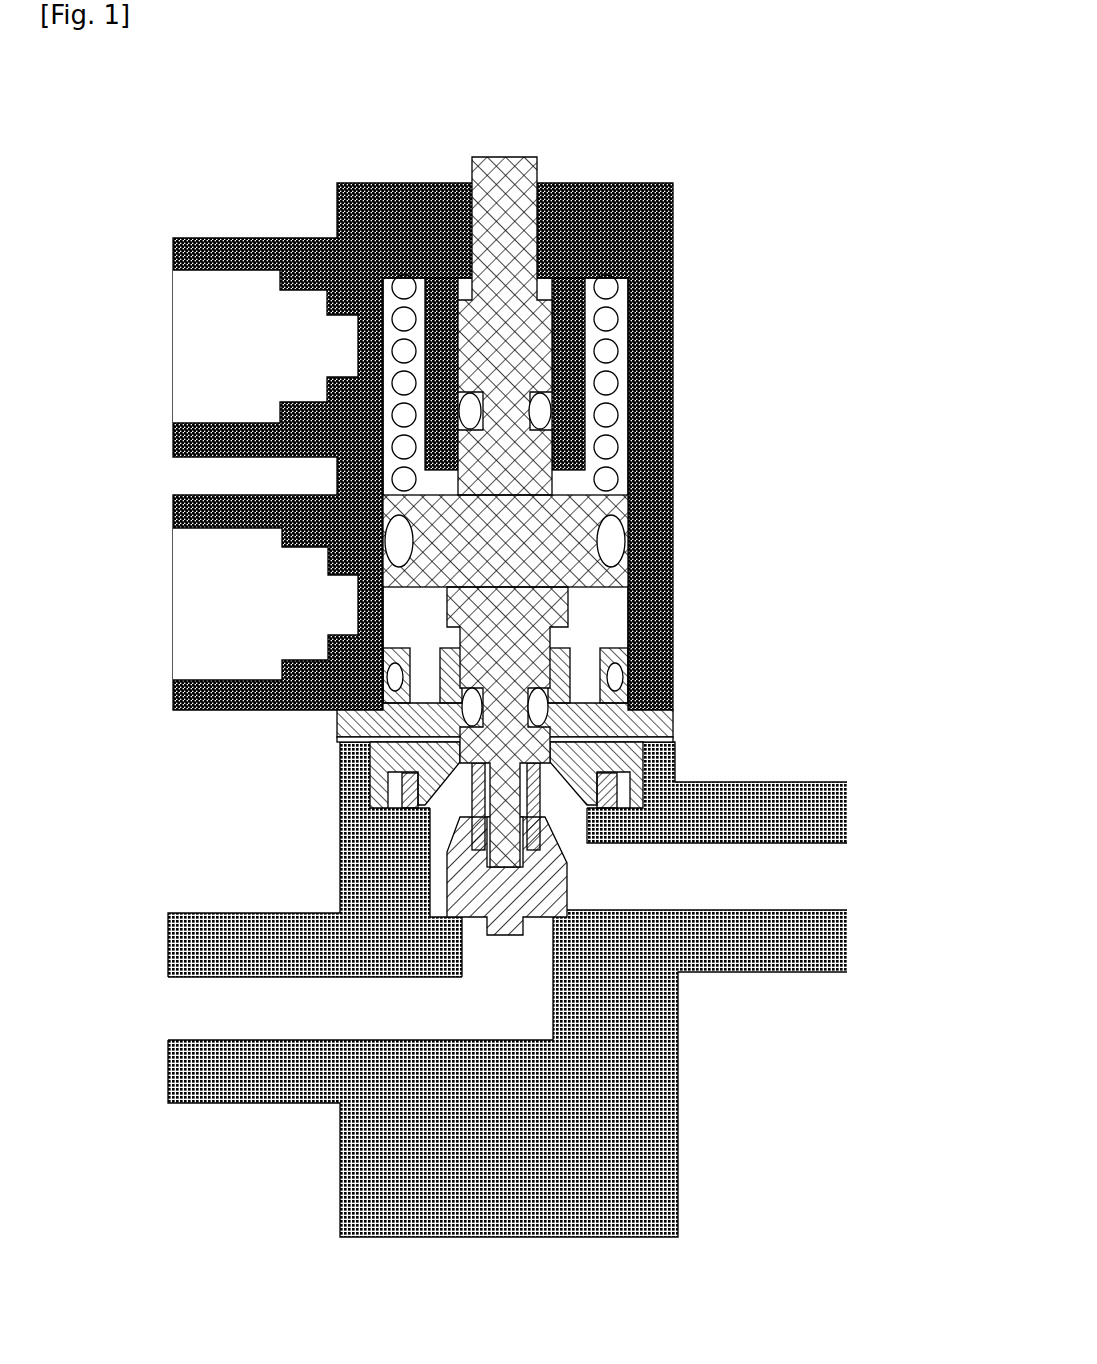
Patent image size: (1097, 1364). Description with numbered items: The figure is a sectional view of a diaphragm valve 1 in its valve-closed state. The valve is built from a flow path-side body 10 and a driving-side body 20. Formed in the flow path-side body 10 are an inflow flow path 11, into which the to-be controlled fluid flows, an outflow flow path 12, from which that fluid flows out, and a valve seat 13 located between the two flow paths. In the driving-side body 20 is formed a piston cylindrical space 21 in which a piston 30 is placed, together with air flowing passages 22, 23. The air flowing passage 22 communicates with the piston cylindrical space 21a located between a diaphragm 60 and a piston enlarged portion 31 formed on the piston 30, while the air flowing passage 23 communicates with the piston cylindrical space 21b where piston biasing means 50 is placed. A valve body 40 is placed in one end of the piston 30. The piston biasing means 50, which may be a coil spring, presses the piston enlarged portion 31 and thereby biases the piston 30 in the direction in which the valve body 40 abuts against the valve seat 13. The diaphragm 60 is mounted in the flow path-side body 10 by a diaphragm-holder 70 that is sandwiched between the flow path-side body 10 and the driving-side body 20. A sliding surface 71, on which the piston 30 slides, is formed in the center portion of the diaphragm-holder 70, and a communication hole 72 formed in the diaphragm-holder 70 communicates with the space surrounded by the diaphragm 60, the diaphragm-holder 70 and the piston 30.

The diaphragm valve 1 is at (505, 671).
The flow path-side body 10 is at (396, 1224).
The inflow flow path 11 is at (235, 1017).
The outflow flow path 12 is at (822, 938).
The valve seat 13 is at (566, 928).
The driving-side body 20 is at (656, 171).
The piston cylindrical space 21 is at (341, 490).
The piston cylindrical space 21a is at (400, 630).
The piston cylindrical space 21b is at (392, 432).
The air flowing passage 22 is at (191, 569).
The air flowing passage 23 is at (191, 331).
The piston 30 is at (517, 498).
The piston enlarged portion 31 is at (385, 560).
The valve body 40 is at (548, 877).
The piston biasing means 50 is at (600, 349).
The diaphragm 60 is at (598, 790).
The diaphragm-holder 70 is at (374, 756).
The sliding surface 71 is at (372, 735).
The communication hole 72 is at (400, 720).